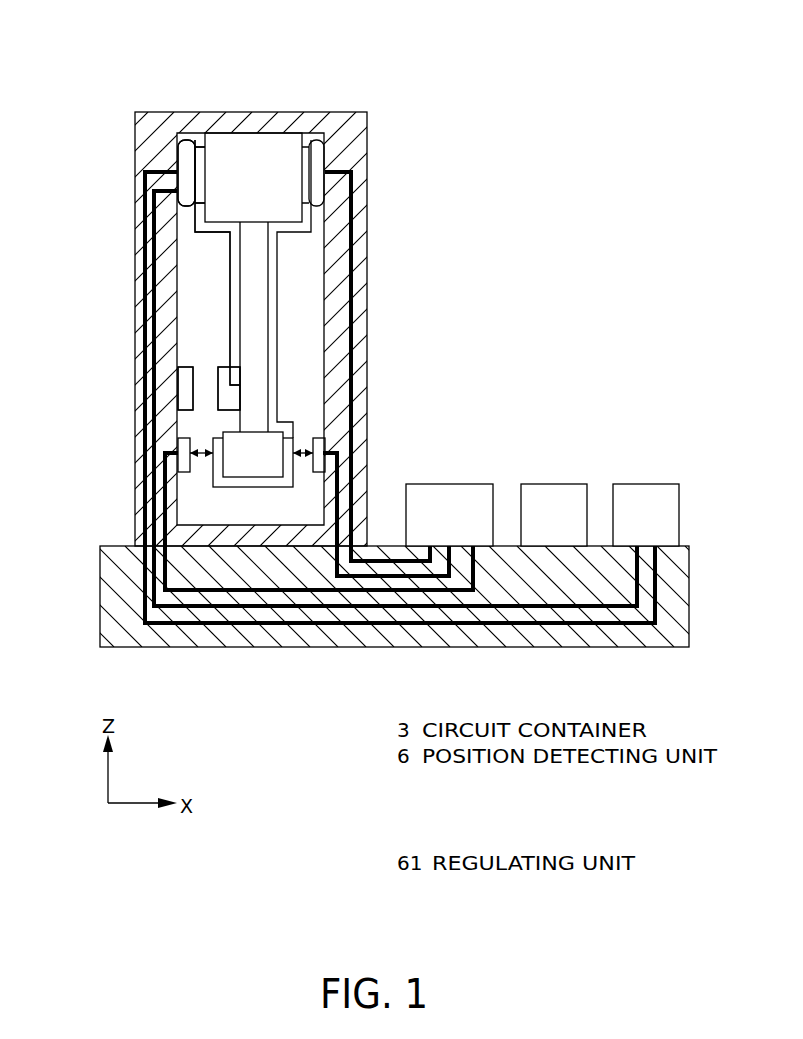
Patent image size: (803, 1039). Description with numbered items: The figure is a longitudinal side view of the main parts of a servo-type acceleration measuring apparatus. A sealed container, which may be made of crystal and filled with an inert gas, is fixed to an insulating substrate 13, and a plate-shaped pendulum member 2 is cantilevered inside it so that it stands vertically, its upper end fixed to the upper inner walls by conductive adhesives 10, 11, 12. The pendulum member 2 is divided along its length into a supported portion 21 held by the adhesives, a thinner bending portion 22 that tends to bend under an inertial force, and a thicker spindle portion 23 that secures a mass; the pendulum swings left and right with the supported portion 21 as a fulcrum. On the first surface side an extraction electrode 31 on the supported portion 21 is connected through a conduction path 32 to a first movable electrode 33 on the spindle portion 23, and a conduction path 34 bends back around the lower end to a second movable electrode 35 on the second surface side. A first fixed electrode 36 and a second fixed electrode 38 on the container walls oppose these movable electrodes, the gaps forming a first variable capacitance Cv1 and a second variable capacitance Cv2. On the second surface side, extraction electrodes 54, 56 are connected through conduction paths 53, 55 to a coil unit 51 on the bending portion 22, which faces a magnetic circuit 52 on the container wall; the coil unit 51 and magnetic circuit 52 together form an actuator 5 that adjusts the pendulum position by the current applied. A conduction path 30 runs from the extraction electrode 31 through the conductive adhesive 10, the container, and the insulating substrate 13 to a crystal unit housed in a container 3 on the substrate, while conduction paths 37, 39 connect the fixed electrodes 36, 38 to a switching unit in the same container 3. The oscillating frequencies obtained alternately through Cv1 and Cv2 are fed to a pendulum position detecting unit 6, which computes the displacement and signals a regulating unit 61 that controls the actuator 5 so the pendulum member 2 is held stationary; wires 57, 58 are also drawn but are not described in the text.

The pendulum member 2 is at (252, 150).
The container 3 is at (450, 484).
The actuator 5 is at (85, 332).
The pendulum position detecting unit 6 is at (555, 484).
The conductive adhesive 10 is at (318, 158).
The conductive adhesive 11 is at (185, 157).
The conductive adhesive 12 is at (186, 173).
The insulating substrate 13 is at (573, 647).
The supported portion 21 is at (537, 783).
The bending portion 22 is at (518, 810).
The spindle portion 23 is at (516, 836).
The conduction path 30 is at (355, 318).
The extraction electrode 31 is at (307, 147).
The conduction path 32 is at (278, 258).
The first movable electrode 33 is at (292, 443).
The conduction path 34 is at (262, 488).
The second movable electrode 35 is at (214, 462).
The first fixed electrode 36 is at (325, 445).
The conduction path 37 is at (340, 478).
The second fixed electrode 38 is at (163, 477).
The conduction path 39 is at (335, 590).
The coil unit 51 is at (228, 367).
The magnetic circuit 52 is at (183, 388).
The conduction path 53 is at (217, 262).
The extraction electrode 54 is at (200, 175).
The conduction path 55 is at (230, 283).
The extraction electrode 56 is at (200, 147).
The wiring 57 is at (218, 623).
The wiring 58 is at (278, 607).
The regulating unit 61 is at (645, 484).
The first variable capacitance Cv1 is at (304, 450).
The second variable capacitance Cv2 is at (202, 450).